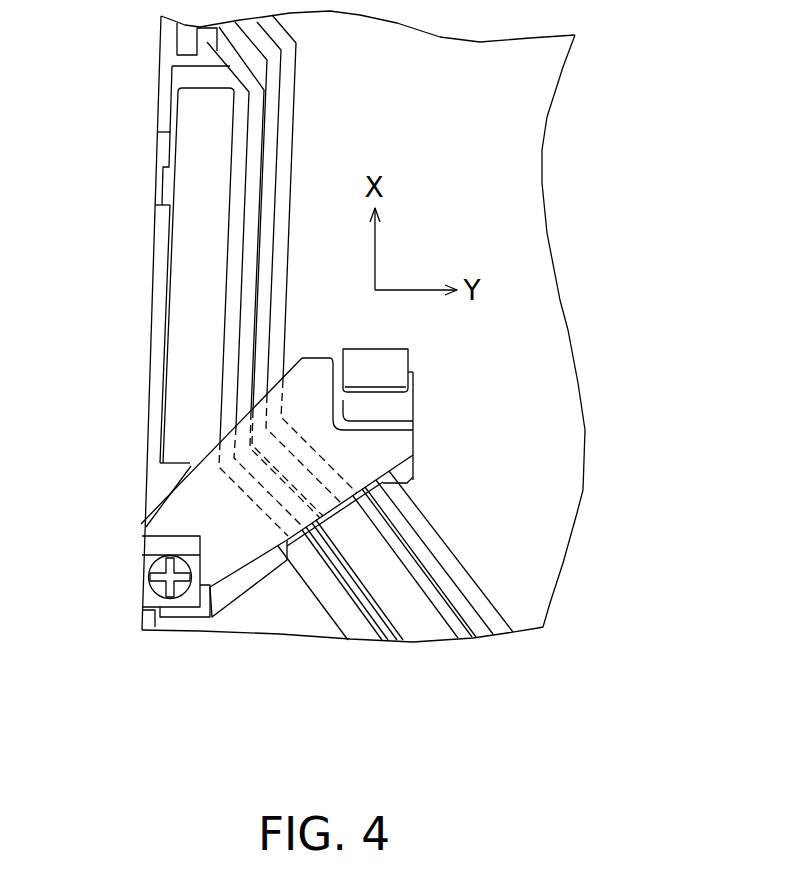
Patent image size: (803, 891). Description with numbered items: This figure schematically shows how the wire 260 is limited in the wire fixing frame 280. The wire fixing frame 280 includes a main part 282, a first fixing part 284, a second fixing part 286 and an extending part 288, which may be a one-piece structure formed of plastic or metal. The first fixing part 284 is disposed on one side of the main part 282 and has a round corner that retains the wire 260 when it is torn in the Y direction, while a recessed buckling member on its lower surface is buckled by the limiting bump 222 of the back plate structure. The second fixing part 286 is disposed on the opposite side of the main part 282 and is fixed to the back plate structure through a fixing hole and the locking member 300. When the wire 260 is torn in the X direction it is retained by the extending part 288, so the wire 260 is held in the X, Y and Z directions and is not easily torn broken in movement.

The limiting bump 222 is at (481, 416).
The wire 260 is at (150, 243).
The wire fixing frame 280 is at (377, 707).
The main part 282 is at (305, 363).
The first fixing part 284 is at (428, 562).
The second fixing part 286 is at (176, 624).
The extending part 288 is at (311, 583).
The locking member 300 is at (111, 577).